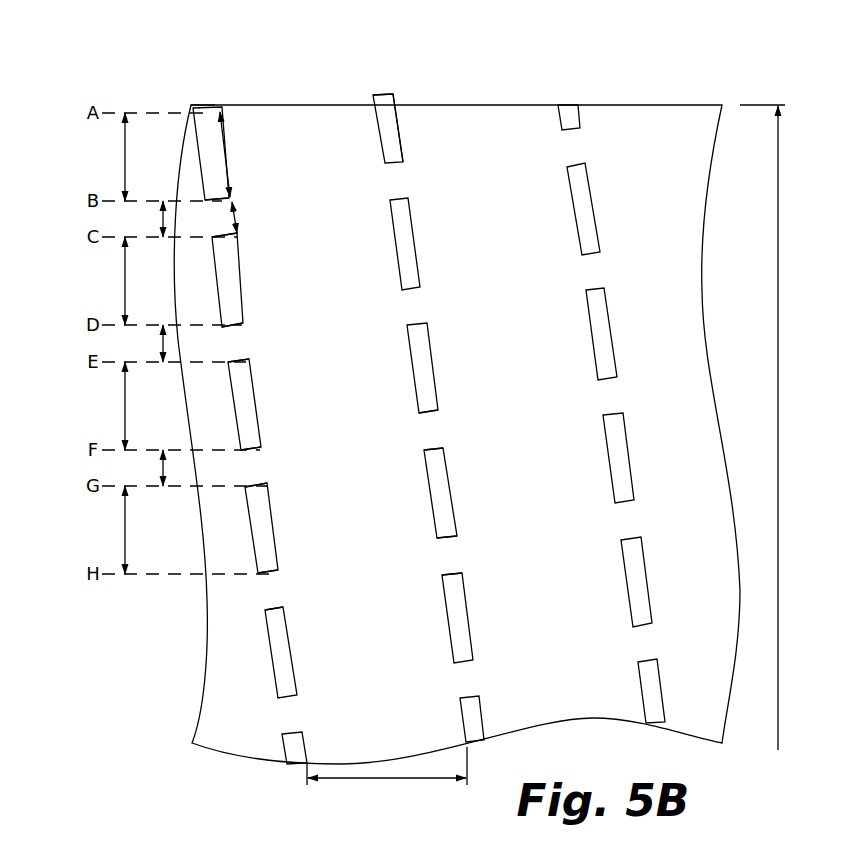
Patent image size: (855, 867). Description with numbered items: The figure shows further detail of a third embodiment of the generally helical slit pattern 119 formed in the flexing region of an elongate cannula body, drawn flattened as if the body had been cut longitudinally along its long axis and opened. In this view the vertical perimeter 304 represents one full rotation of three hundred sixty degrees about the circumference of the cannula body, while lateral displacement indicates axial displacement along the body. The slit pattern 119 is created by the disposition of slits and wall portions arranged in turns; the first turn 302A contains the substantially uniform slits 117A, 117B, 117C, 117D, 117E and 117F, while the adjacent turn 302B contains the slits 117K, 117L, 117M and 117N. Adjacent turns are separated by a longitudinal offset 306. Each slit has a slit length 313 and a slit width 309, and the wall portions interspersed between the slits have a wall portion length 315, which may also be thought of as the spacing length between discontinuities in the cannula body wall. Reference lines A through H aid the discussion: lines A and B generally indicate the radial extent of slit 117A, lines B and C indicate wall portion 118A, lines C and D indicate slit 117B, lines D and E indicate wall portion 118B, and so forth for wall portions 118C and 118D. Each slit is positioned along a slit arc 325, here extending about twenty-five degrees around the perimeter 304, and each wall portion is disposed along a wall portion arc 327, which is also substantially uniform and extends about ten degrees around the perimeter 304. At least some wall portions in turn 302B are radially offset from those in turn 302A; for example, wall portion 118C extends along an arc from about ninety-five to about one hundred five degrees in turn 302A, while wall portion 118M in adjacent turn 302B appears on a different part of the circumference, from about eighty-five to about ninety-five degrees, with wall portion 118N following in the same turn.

The generally helical slit pattern 119 is at (528, 94).
The slit 117A is at (212, 172).
The slit 117B is at (224, 277).
The slit 117C is at (243, 402).
The slit 117D is at (260, 527).
The slit 117E is at (283, 659).
The slit 117F is at (298, 748).
The slit 117K is at (392, 135).
The slit 117L is at (405, 243).
The slit 117M is at (423, 367).
The slit 117N is at (444, 497).
The wall portion 118A is at (215, 217).
The wall portion 118B is at (238, 342).
The wall portion 118C is at (258, 467).
The wall portion 118D is at (277, 592).
The wall portion 118M is at (435, 430).
The wall portion 118N is at (457, 555).
The turn 302A is at (200, 98).
The turn 302B is at (422, 89).
The slit width 309 is at (372, 97).
The slit length 313 is at (226, 143).
The wall portion length 315 is at (233, 214).
The slit arc 325 is at (123, 162).
The wall portion arc 327 is at (162, 220).
The perimeter 304 is at (778, 377).
The longitudinal offset 306 is at (384, 779).